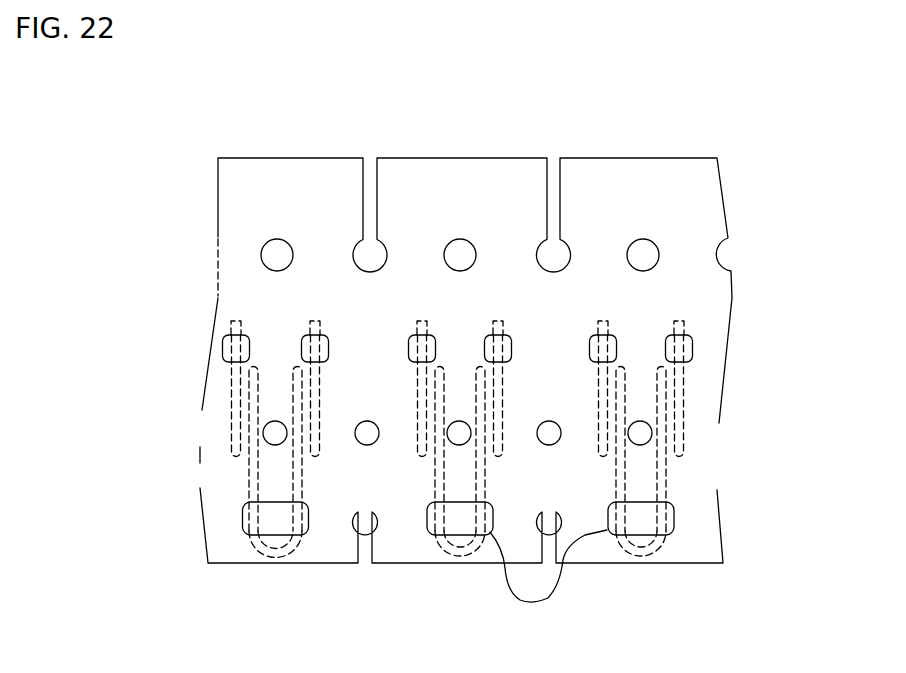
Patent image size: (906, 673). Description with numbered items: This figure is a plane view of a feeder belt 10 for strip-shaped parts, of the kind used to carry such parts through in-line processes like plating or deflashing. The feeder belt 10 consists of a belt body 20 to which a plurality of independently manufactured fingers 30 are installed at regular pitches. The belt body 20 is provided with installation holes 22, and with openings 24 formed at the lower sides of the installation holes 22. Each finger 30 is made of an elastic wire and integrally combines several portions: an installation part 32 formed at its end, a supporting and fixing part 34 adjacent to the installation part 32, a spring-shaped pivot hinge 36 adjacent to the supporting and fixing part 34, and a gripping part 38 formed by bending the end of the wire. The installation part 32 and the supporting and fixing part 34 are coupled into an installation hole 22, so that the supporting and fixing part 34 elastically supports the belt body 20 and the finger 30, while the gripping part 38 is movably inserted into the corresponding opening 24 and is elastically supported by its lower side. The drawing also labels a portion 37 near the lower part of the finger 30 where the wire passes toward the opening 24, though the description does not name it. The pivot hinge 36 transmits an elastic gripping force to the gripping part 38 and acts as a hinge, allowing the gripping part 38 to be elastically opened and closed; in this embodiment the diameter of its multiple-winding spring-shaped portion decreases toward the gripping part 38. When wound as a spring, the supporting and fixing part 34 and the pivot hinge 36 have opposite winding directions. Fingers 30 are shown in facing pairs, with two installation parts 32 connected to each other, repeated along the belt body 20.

The feeder belt 10 is at (194, 192).
The belt body 20 is at (453, 177).
The installation hole 22 is at (307, 350).
The opening 24 is at (548, 582).
The finger 30 is at (406, 330).
The installation part 32 is at (236, 320).
The supporting and fixing part 34 is at (693, 352).
The pivot hinge 36 is at (270, 447).
The holding portion 37 is at (240, 499).
The gripping part 38 is at (292, 550).